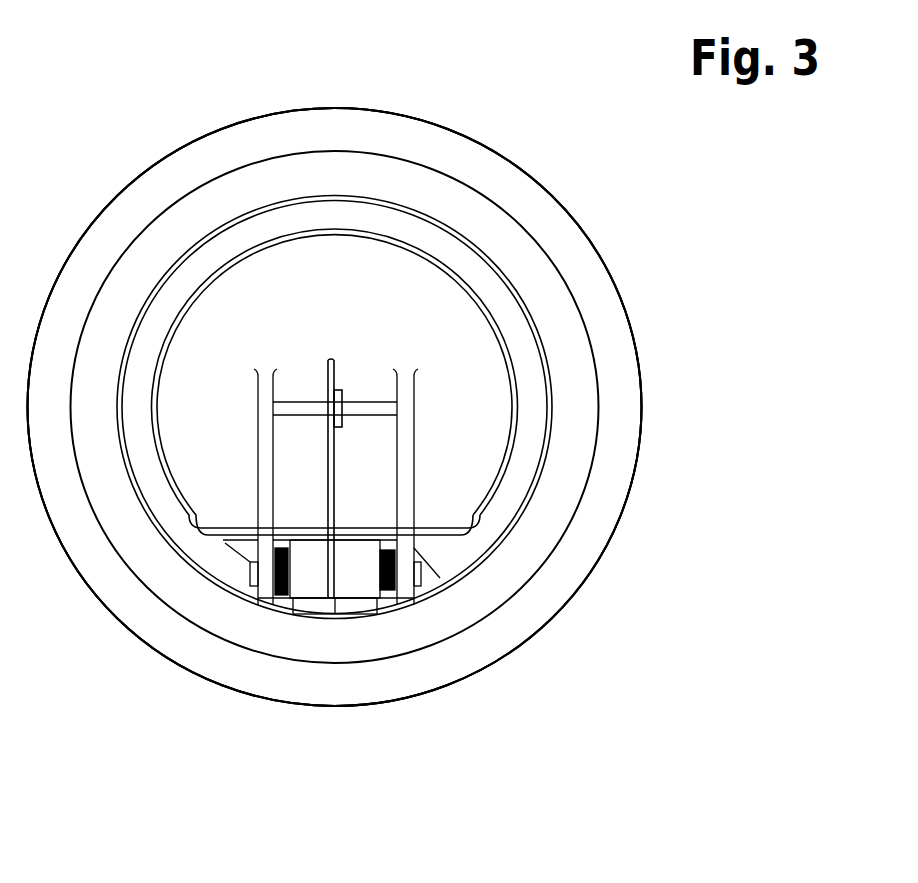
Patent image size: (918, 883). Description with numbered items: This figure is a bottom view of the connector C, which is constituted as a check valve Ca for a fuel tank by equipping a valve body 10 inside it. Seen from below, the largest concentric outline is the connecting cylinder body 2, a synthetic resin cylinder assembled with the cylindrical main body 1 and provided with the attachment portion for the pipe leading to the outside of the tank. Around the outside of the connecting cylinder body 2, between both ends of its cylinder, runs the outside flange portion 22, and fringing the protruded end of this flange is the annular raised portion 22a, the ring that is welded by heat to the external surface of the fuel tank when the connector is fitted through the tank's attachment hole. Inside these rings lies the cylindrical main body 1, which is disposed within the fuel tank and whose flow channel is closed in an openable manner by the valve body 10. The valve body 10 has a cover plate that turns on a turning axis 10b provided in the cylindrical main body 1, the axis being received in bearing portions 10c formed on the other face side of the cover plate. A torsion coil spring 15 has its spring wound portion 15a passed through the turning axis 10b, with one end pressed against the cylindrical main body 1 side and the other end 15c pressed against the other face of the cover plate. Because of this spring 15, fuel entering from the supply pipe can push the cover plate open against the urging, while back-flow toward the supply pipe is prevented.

The cylindrical main body 1 is at (532, 405).
The connecting cylinder body 2 is at (572, 218).
The outside flange portion 22 is at (613, 280).
The annular raised portion 22a is at (612, 322).
The valve body 10 is at (453, 467).
The turning axis 10b is at (253, 572).
The bearing portion 10c is at (270, 600).
The torsion coil spring 15 is at (273, 607).
The spring wound portion 15a is at (273, 607).
The other end of the spring 15c is at (328, 367).
The connector C is at (514, 143).
The check valve Ca is at (514, 138).